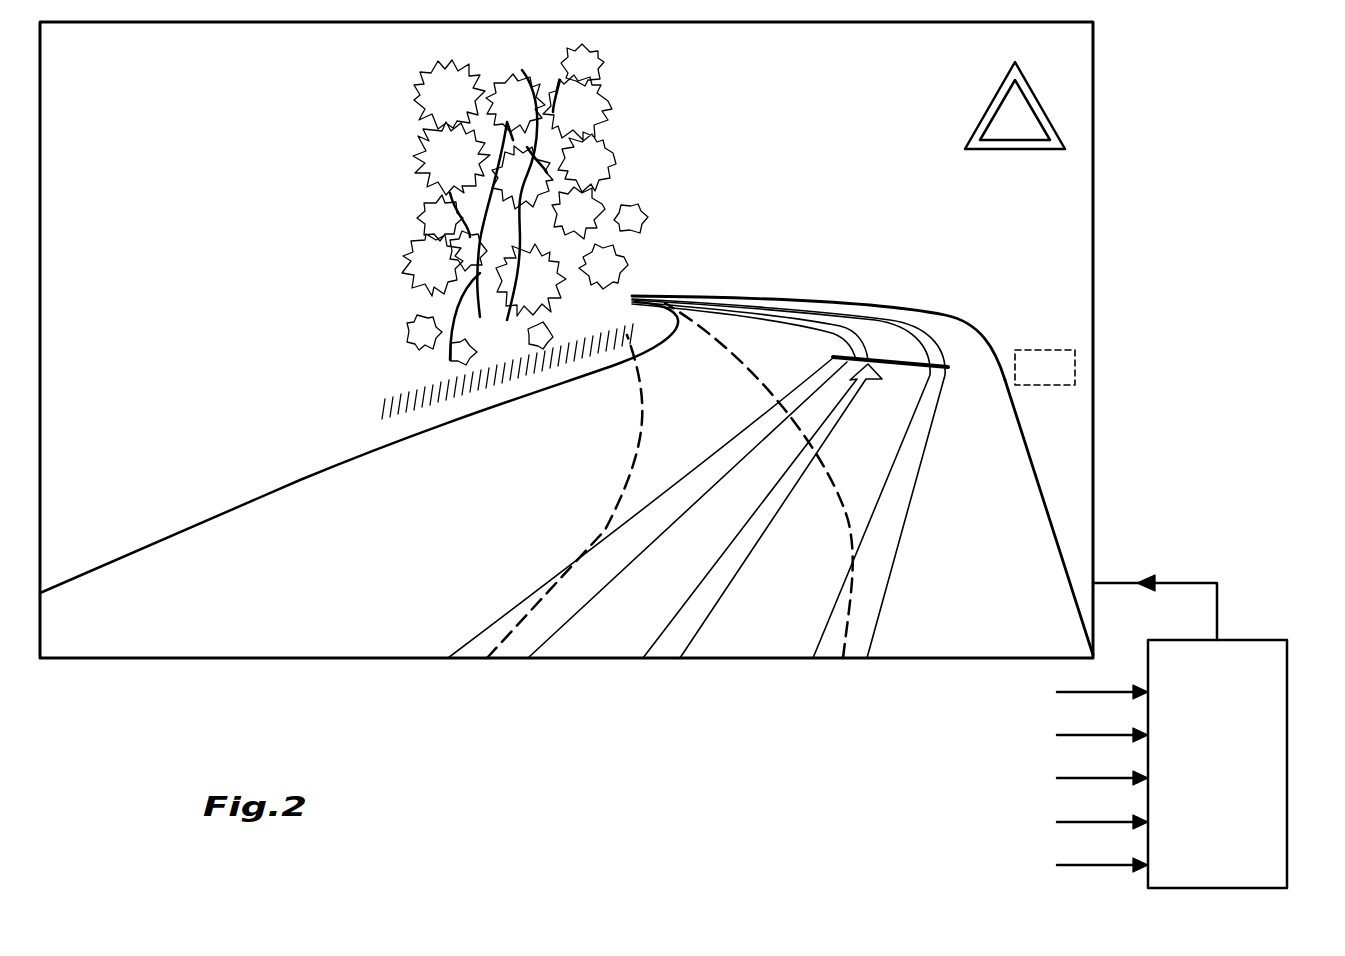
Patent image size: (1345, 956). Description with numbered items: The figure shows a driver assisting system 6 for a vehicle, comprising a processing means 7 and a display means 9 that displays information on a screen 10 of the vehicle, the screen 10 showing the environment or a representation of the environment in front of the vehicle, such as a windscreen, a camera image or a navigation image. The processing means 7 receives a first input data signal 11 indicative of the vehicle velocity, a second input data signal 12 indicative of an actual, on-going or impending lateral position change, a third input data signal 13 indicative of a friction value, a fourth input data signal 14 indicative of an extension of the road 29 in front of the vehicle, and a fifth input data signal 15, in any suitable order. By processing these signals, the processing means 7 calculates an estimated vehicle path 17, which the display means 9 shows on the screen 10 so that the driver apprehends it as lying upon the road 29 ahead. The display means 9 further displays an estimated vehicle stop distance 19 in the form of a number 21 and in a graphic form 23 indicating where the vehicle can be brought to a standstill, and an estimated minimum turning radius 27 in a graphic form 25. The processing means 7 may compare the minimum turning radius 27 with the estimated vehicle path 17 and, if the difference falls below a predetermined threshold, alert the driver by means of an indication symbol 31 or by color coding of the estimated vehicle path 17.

The driver assisting system 6 is at (1290, 150).
The processing means 7 is at (1228, 710).
The display means 9 is at (1108, 202).
The screen 10 is at (745, 121).
The first input data signal 11 is at (1102, 679).
The second input data signal 12 is at (1102, 722).
The third input data signal 13 is at (1102, 765).
The fourth input data signal 14 is at (1102, 809).
The fifth input data signal 15 is at (1102, 852).
The estimated vehicle path 17 is at (828, 310).
The estimated vehicle stop distance 19 is at (938, 310).
The number 21 is at (1057, 350).
The graphic form 23 is at (848, 340).
The graphic form 25 is at (636, 452).
The estimated minimum turning radius 27 is at (622, 383).
The road 29 is at (1023, 437).
The indication symbol 31 is at (990, 106).